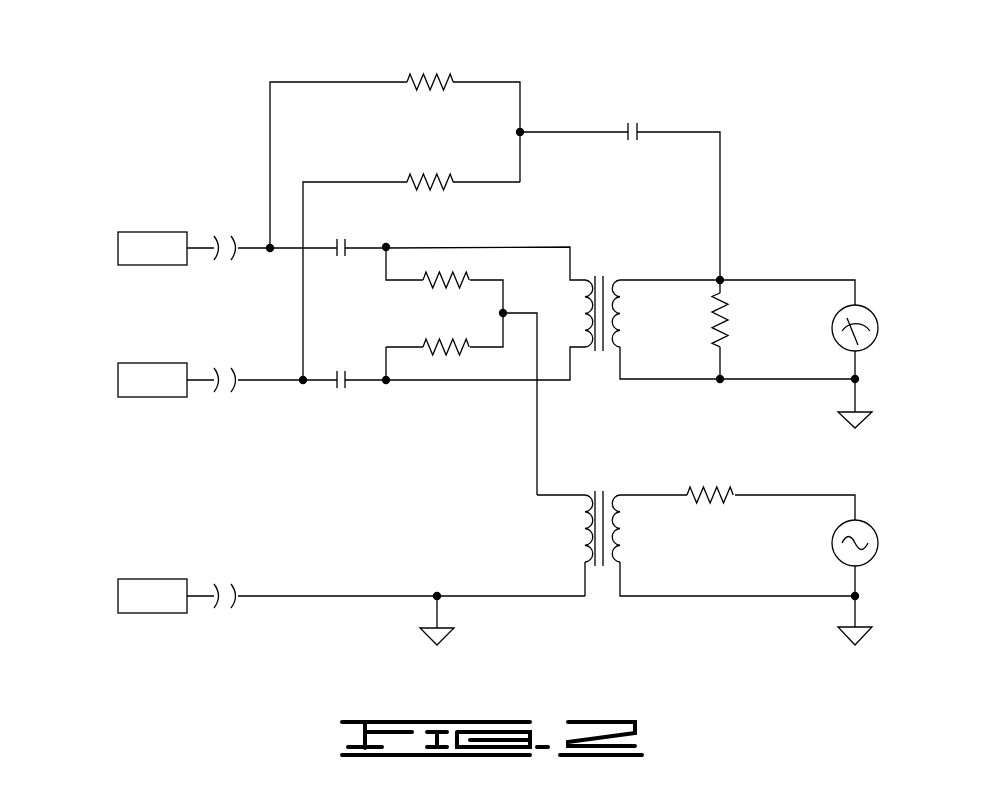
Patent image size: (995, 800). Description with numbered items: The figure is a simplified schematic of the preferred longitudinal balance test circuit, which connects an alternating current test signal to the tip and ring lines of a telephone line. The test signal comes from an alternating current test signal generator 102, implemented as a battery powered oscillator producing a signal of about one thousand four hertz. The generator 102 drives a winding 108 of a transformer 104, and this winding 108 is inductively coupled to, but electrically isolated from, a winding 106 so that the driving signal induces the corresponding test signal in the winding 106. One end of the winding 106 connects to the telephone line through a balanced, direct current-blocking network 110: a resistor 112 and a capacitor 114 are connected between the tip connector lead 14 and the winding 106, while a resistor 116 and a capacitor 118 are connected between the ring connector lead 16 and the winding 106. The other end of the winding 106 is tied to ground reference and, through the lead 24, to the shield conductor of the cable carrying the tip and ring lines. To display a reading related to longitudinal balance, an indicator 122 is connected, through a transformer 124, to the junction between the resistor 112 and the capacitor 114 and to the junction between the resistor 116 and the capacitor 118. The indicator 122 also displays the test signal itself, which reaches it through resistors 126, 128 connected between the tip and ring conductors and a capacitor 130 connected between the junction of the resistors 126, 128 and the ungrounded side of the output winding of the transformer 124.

The tip connector lead 14 is at (202, 249).
The ring connector lead 16 is at (202, 381).
The lead 24 is at (202, 597).
The alternating current test signal generator 102 is at (833, 542).
The transformer 104 is at (587, 590).
The winding 106 is at (584, 531).
The winding 108 is at (619, 530).
The balanced, direct current-blocking network 110 is at (488, 226).
The resistor 112 is at (446, 283).
The capacitor 114 is at (348, 256).
The resistor 116 is at (427, 345).
The capacitor 118 is at (350, 389).
The indicator 122 is at (834, 321).
The transformer 124 is at (610, 260).
The resistor 126 is at (427, 76).
The resistor 128 is at (425, 178).
The capacitor 130 is at (642, 134).